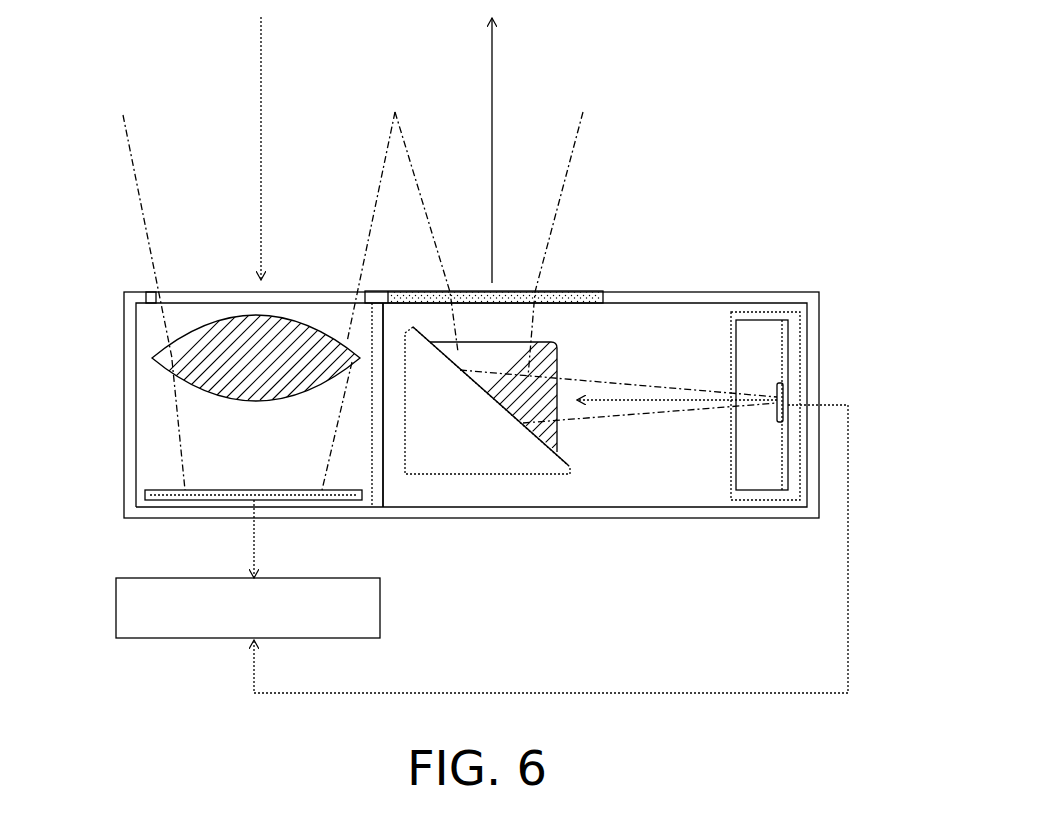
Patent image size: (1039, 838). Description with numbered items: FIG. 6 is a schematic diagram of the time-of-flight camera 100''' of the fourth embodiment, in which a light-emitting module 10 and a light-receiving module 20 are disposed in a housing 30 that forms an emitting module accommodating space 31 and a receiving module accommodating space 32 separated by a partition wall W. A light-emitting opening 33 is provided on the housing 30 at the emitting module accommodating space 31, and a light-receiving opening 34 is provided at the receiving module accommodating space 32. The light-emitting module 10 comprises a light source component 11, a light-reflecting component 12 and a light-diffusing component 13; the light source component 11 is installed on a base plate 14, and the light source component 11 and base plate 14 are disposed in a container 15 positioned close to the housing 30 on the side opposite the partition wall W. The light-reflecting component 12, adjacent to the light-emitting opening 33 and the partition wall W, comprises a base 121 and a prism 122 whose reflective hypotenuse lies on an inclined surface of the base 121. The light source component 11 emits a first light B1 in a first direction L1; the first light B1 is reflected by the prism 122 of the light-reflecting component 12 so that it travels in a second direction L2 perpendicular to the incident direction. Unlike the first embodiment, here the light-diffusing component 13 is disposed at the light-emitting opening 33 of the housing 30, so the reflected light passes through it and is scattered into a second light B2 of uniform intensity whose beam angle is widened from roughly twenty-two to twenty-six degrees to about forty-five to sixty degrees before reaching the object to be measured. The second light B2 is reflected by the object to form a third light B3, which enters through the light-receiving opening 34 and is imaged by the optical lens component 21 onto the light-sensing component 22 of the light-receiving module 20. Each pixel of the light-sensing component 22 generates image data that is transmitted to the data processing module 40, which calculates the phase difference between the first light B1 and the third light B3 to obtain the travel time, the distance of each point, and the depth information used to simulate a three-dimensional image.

The time-of-flight camera 100''' is at (697, 27).
The light-emitting module 10 is at (485, 357).
The housing 30 is at (820, 297).
The emitting module accommodating space 31 is at (700, 318).
The receiving module accommodating space 32 is at (150, 330).
The light-receiving opening 34 is at (148, 291).
The light-receiving module 20 is at (214, 439).
The optical lens component 21 is at (200, 350).
The light-sensing component 22 is at (252, 491).
The third light B3 is at (135, 175).
The partition wall W is at (384, 491).
The light-emitting opening 33 is at (600, 298).
The light-reflecting component 12 is at (527, 397).
The base 121 is at (523, 476).
The prism 122 is at (560, 438).
The light-diffusing component 13 is at (460, 370).
The second light B2 is at (567, 178).
The second direction L2 is at (493, 133).
The first light B1 is at (578, 370).
The first direction L1 is at (642, 400).
The container 15 is at (821, 441).
The base plate 14 is at (787, 358).
The light source component 11 is at (780, 387).
The data processing module 40 is at (116, 608).